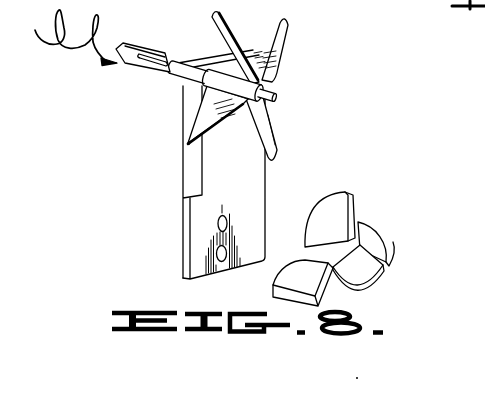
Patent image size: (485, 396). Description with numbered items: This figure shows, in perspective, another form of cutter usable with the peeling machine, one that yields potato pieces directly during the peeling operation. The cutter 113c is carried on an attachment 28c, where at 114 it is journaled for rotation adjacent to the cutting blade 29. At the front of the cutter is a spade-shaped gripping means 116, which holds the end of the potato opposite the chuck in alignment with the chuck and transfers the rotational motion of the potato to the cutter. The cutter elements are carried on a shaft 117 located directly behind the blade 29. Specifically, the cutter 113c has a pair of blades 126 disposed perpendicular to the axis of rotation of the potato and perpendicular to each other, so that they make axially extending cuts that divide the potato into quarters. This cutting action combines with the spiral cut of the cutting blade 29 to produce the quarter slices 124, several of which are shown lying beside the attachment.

The cutting blade 29 is at (183, 128).
The attachment 28c is at (273, 186).
The blades 126 is at (274, 40).
The shaft 117 is at (181, 60).
The journal 114 is at (179, 77).
The gripping means 116 is at (131, 65).
The cutter 113c is at (288, 78).
The quarter slices 124 is at (372, 233).